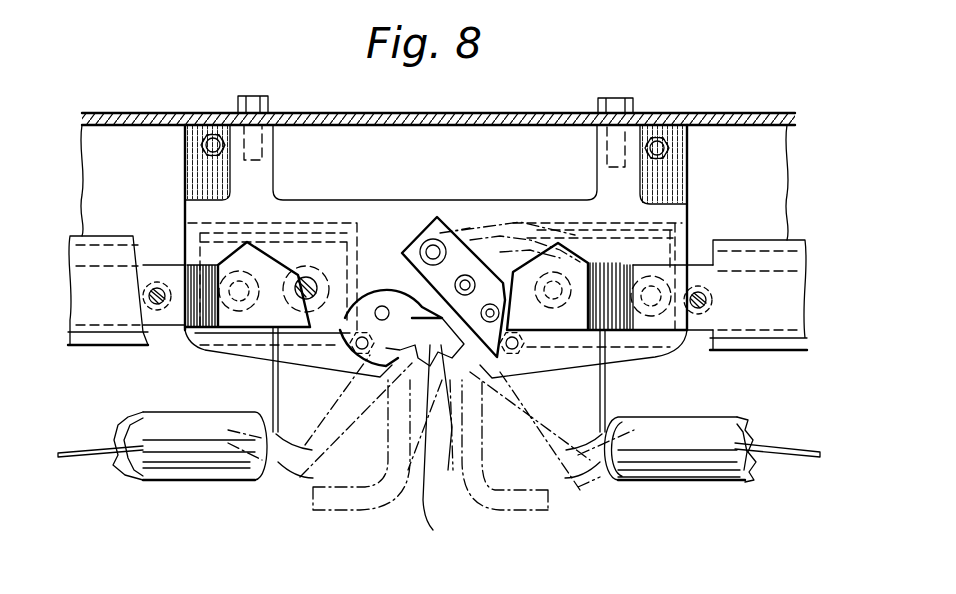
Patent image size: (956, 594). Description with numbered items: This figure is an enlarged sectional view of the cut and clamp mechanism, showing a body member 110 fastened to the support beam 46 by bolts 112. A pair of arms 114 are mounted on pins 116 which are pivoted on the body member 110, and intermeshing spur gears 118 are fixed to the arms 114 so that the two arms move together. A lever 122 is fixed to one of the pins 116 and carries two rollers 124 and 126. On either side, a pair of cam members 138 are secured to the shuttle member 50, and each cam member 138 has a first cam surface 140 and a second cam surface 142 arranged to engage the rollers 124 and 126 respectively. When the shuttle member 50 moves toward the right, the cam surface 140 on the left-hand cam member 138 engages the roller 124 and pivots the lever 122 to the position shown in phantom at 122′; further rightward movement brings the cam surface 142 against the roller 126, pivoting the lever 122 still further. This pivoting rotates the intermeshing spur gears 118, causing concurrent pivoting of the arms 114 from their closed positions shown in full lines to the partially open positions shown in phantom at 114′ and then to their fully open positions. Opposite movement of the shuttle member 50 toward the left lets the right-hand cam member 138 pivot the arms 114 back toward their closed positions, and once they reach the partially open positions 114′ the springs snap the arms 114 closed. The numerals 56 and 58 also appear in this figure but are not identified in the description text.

The support beam 46 is at (430, 114).
The shuttle member 50 is at (78, 240).
The cylinder 56 is at (195, 480).
The piston rod 58 is at (100, 447).
The body member 110 is at (372, 230).
The bolts 112 is at (254, 97).
The arms 114 is at (257, 347).
The partially open positions of the arms 114′ is at (285, 485).
The pins 116 is at (378, 306).
The intermeshing spur gears 118 is at (453, 445).
The lever 122 is at (455, 270).
The first phantom position of the lever 122′ is at (586, 204).
The roller 124 is at (433, 220).
The roller 126 is at (470, 262).
The cam members 138 is at (160, 284).
The first cam surface 140 is at (272, 250).
The second cam surface 142 is at (309, 278).